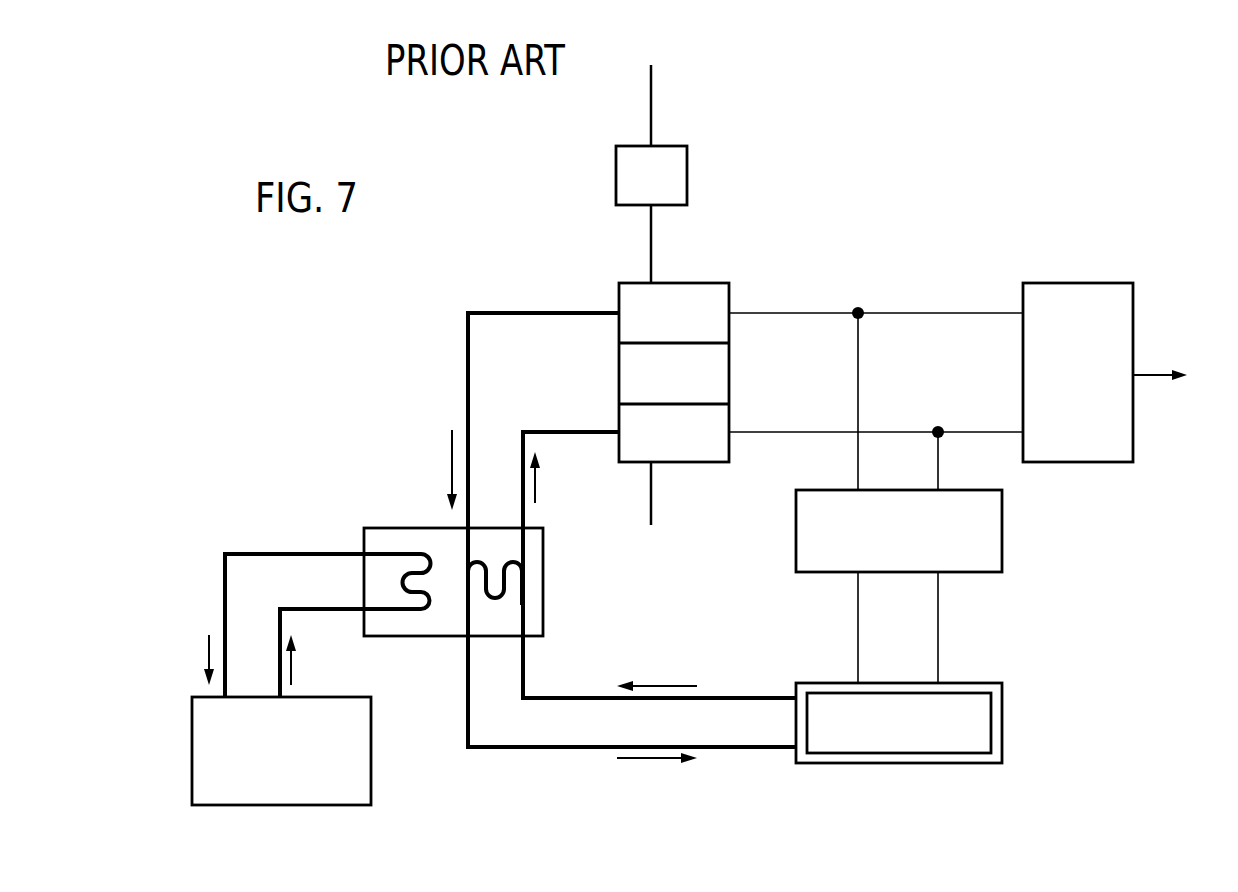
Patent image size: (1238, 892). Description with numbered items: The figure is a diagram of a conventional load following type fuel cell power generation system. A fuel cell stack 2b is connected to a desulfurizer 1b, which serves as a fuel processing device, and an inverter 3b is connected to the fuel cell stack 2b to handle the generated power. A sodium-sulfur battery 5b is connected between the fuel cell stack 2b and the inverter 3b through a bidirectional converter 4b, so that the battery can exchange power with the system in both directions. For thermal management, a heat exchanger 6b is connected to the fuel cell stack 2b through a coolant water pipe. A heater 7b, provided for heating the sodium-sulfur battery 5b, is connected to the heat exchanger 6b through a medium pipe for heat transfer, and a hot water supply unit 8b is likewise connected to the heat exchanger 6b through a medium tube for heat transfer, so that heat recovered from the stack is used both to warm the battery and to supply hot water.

The desulfurizer 1b is at (674, 172).
The fuel cell stack 2b is at (690, 283).
The inverter 3b is at (1095, 283).
The bidirectional converter 4b is at (1003, 497).
The sodium-sulfur battery 5b is at (977, 705).
The heat exchanger 6b is at (543, 608).
The heater 7b is at (1003, 745).
The hot water supply unit 8b is at (358, 785).